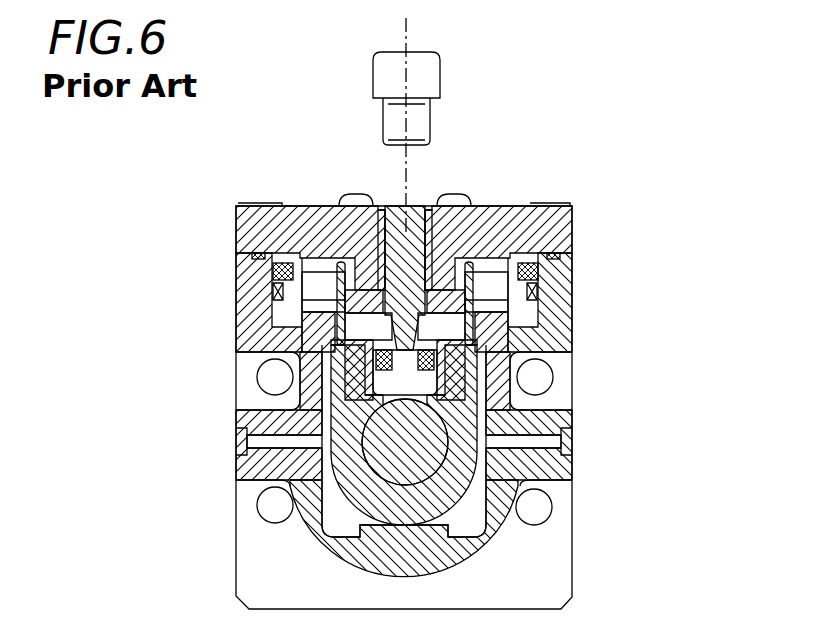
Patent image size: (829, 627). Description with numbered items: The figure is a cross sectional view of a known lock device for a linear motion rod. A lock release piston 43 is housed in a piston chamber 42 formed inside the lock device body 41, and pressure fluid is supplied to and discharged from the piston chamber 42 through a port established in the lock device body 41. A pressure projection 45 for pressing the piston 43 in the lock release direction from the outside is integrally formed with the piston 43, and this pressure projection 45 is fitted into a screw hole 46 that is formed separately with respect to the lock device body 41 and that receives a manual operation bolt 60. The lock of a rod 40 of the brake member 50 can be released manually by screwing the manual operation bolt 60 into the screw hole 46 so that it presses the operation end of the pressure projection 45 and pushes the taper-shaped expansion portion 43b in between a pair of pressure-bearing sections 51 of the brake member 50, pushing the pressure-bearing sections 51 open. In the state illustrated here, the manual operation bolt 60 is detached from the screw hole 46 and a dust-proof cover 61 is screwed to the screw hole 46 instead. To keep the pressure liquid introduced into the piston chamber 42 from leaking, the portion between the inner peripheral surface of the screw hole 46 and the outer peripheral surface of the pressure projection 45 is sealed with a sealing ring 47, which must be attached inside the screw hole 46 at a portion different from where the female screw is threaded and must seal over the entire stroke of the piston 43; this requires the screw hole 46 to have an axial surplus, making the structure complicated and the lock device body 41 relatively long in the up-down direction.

The rod 40 is at (393, 457).
The lock device body 41 is at (404, 406).
The piston chamber 42 is at (492, 253).
The lock release piston 43 is at (538, 276).
The taper-shaped expansion portion 43b is at (410, 330).
The pressure projection 45 is at (390, 235).
The screw hole 46 is at (413, 203).
The sealing ring 47 is at (345, 268).
The brake member 50 is at (443, 490).
The pressure-bearing section 51 is at (353, 366).
The manual operation bolt 60 is at (420, 72).
The dust-proof cover 61 is at (430, 206).